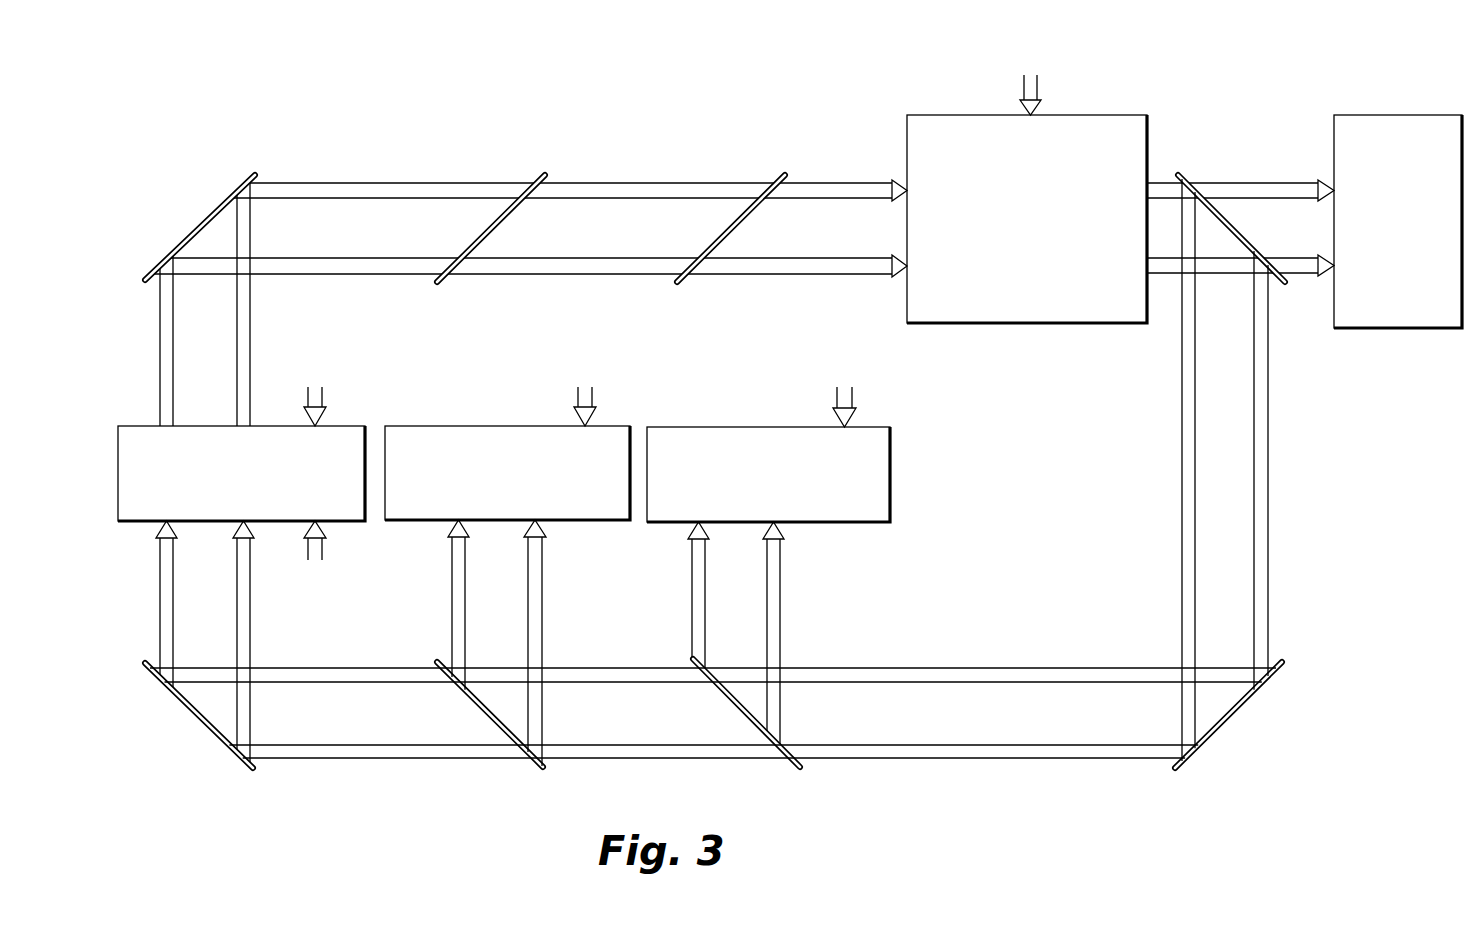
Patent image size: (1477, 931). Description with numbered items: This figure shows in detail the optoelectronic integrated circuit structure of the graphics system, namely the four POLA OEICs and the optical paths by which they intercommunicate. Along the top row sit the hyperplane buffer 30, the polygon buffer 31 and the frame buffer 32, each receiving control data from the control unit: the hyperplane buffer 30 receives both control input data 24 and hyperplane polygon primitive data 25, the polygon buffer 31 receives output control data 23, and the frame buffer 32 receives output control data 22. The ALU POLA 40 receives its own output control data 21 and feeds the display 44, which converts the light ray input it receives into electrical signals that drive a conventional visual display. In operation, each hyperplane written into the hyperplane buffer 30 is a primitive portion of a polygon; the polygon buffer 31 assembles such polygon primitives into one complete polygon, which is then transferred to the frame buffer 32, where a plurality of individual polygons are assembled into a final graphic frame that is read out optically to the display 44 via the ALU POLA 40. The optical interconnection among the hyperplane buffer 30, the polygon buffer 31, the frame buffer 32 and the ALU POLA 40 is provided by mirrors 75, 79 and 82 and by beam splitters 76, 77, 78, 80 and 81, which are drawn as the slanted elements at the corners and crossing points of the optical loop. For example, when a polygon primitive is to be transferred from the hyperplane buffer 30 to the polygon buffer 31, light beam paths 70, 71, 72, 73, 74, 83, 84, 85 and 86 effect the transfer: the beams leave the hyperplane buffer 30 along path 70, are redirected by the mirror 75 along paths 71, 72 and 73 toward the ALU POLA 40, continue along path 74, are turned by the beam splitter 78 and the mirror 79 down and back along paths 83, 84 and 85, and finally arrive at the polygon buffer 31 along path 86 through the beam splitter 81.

The output control data 21 is at (1024, 97).
The output control data 22 is at (852, 401).
The output control data 23 is at (590, 402).
The control input data 24 is at (320, 404).
The hyperplane image data 25 is at (303, 549).
The hyperplane buffer 30 is at (337, 512).
The polygon buffer 31 is at (523, 500).
The frame buffer 32 is at (892, 458).
The ALU POLA 40 is at (967, 313).
The display 44 is at (1400, 318).
The light beam path 70 is at (170, 368).
The light beam path 71 is at (300, 186).
The light beam path 72 is at (627, 190).
The light beam path 73 is at (868, 190).
The light beam path 74 is at (1163, 187).
The mirror 75 is at (200, 236).
The beam splitter 76 is at (502, 222).
The beam splitter 77 is at (752, 213).
The beam splitter 78 is at (1227, 230).
The mirror 79 is at (1215, 722).
The beam splitter 80 is at (782, 710).
The beam splitter 81 is at (492, 710).
The mirror 82 is at (198, 712).
The light beam path 83 is at (1185, 516).
The light beam path 84 is at (890, 680).
The light beam path 85 is at (575, 672).
The light beam path 86 is at (462, 628).